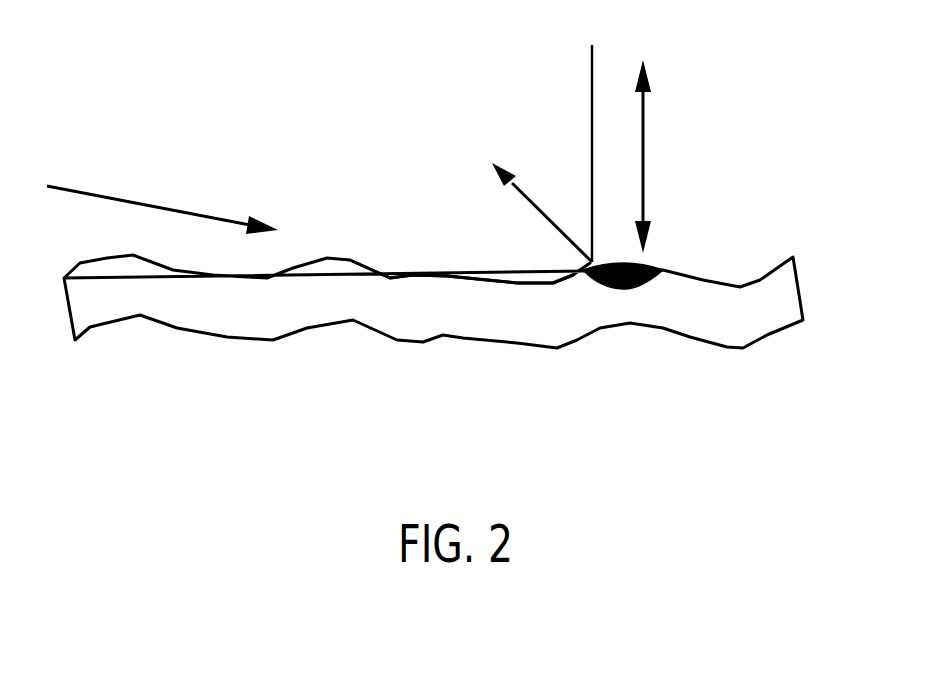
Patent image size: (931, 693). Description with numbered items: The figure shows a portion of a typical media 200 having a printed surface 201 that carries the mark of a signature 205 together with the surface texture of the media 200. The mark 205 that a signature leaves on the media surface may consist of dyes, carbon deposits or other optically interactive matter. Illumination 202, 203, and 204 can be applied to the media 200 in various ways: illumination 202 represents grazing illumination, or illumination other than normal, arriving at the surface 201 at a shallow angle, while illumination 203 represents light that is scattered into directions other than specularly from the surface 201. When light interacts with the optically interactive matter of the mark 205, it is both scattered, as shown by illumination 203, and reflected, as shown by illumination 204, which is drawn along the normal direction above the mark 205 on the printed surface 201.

The media 200 is at (458, 301).
The printed surface 201 is at (461, 260).
The illumination 202 is at (162, 203).
The illumination 203 is at (542, 205).
The illumination 204 is at (645, 153).
The mark of a signature 205 is at (639, 288).